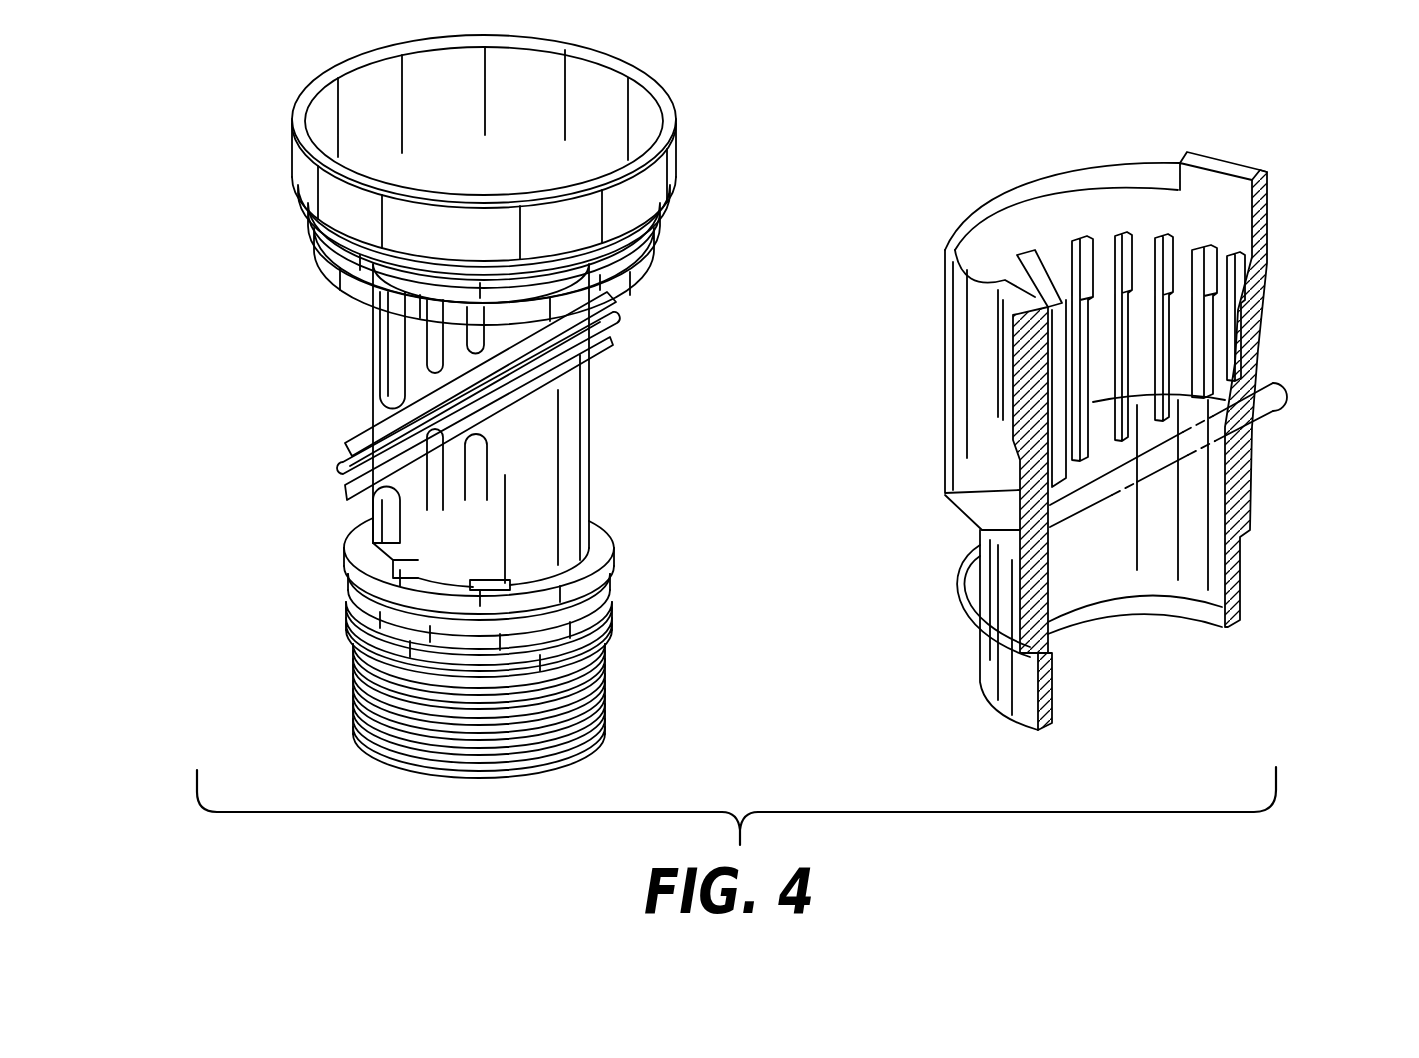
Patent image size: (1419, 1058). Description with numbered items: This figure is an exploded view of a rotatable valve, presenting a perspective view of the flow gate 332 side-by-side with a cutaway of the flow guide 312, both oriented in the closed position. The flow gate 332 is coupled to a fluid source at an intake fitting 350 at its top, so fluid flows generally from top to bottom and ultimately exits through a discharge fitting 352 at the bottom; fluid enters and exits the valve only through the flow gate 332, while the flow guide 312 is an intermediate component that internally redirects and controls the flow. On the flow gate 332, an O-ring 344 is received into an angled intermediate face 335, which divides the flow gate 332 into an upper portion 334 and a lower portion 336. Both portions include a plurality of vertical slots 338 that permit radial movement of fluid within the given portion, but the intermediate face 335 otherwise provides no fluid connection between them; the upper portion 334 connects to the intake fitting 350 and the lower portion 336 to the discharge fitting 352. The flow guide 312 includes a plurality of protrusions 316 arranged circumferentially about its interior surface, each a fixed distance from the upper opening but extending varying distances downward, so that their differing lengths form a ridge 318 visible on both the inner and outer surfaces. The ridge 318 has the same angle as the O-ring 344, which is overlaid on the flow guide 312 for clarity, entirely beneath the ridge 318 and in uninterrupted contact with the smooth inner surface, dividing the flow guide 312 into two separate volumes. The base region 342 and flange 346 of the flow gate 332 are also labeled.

The flow guide 312 is at (1268, 275).
The protrusions 316 is at (1043, 297).
The ridge 318 is at (953, 508).
The flow gate 332 is at (705, 238).
The upper portion 334 is at (225, 295).
The intermediate face 335 is at (225, 438).
The lower portion 336 is at (640, 342).
The vertical slots 338 is at (375, 365).
The base 342 is at (342, 582).
The O-ring 344 is at (625, 315).
The flange 346 is at (355, 268).
The intake fitting 350 is at (297, 112).
The discharge fitting 352 is at (585, 752).